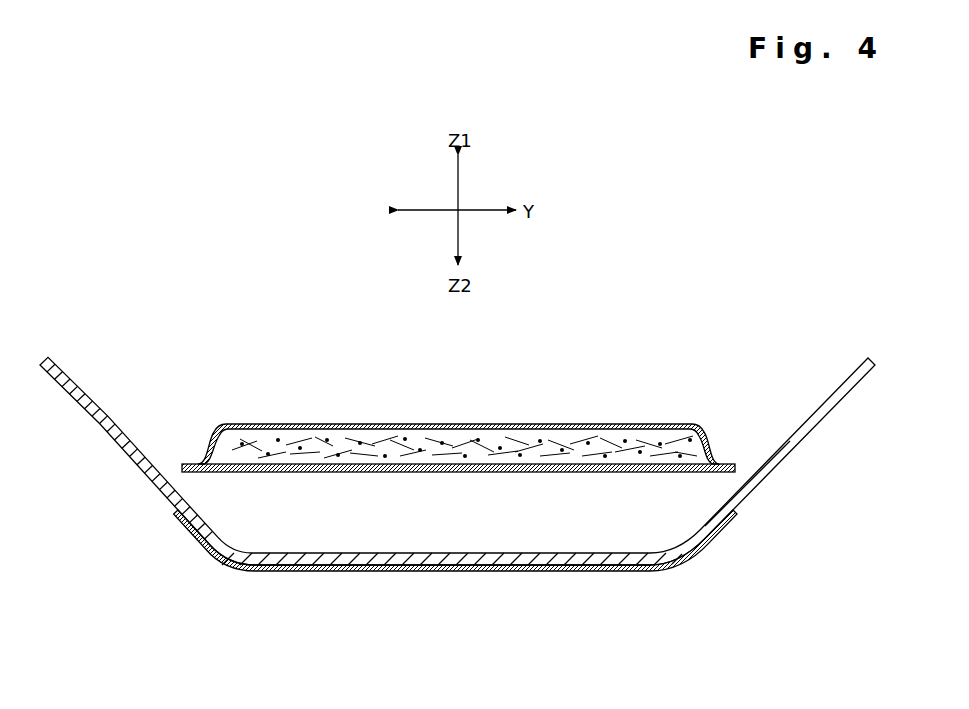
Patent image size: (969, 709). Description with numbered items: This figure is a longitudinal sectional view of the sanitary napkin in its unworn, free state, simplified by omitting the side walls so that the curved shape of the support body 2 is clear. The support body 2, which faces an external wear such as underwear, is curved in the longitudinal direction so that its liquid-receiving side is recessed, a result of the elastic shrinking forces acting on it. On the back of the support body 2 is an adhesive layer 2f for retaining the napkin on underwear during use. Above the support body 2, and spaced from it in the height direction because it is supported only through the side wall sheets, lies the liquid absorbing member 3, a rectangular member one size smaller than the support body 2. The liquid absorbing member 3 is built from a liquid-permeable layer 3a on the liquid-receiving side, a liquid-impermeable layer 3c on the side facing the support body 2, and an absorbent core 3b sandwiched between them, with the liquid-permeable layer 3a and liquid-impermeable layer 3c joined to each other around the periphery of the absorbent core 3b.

The support body 2 is at (802, 440).
The adhesive layer 2f is at (520, 573).
The liquid absorbing member 3 is at (458, 433).
The liquid-permeable layer 3a is at (304, 424).
The absorbent core 3b is at (392, 443).
The liquid-impermeable layer 3c is at (333, 473).